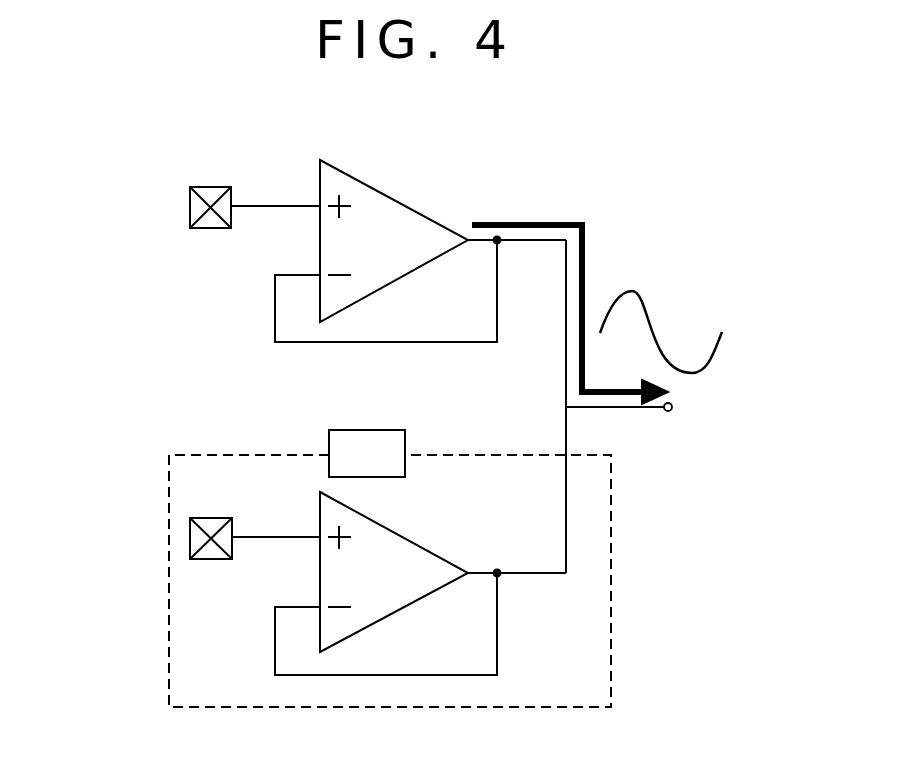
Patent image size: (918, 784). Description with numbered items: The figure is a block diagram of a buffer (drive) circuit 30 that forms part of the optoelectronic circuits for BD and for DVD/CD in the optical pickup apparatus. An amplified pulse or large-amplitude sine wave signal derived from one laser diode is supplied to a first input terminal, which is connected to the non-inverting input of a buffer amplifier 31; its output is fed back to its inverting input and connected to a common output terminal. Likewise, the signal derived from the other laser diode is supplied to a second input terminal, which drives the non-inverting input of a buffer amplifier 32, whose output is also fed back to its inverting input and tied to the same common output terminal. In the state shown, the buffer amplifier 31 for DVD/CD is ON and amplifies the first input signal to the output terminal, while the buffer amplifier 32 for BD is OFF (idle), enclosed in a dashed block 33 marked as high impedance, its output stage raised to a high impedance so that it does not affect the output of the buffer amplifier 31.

The buffer circuit 30 is at (705, 116).
The buffer amplifier 31 is at (415, 207).
The buffer amplifier 32 is at (413, 540).
The high-impedance output block 33 is at (611, 618).